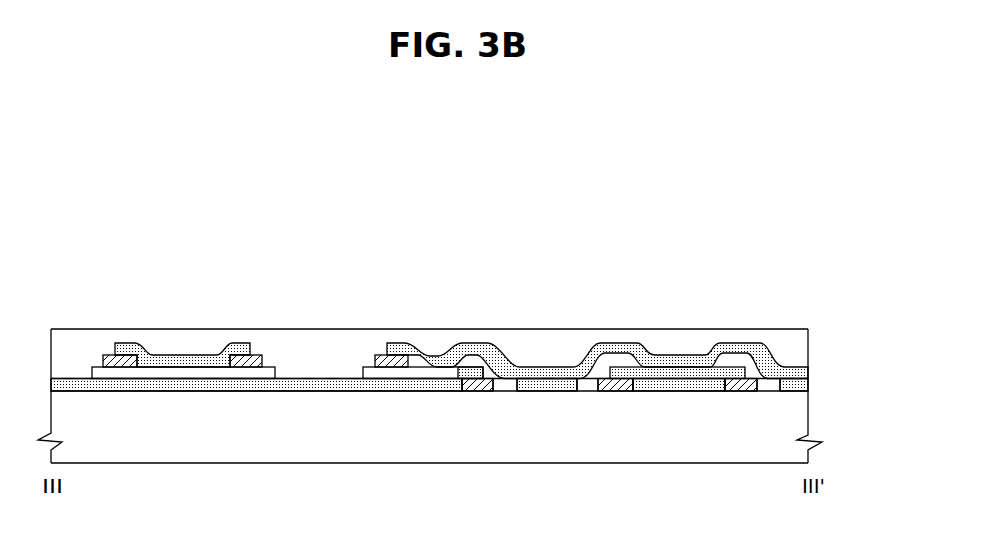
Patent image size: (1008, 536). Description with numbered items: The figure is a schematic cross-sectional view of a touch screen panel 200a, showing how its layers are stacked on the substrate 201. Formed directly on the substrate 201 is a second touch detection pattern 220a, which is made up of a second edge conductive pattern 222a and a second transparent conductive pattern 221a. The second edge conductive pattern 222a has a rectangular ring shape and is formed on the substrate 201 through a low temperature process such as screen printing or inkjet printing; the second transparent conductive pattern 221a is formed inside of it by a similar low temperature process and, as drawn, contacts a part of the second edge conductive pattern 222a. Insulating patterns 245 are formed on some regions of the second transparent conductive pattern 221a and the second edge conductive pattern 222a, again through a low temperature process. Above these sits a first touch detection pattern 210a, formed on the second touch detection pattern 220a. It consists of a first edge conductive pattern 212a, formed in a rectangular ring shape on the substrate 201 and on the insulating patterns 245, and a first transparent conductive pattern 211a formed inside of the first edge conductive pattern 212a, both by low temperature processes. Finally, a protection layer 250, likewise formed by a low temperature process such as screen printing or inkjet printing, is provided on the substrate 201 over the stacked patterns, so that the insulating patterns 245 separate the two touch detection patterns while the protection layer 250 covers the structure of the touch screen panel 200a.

The touch screen panel 200a is at (778, 242).
The substrate 201 is at (808, 415).
The insulating patterns 245 is at (431, 373).
The protection layer 250 is at (808, 345).
The first touch detection pattern 210a is at (197, 272).
The first transparent conductive pattern 211a is at (189, 360).
The first edge conductive pattern 212a is at (123, 358).
The second touch detection pattern 220a is at (692, 272).
The second transparent conductive pattern 221a is at (687, 378).
The second edge conductive pattern 222a is at (613, 378).